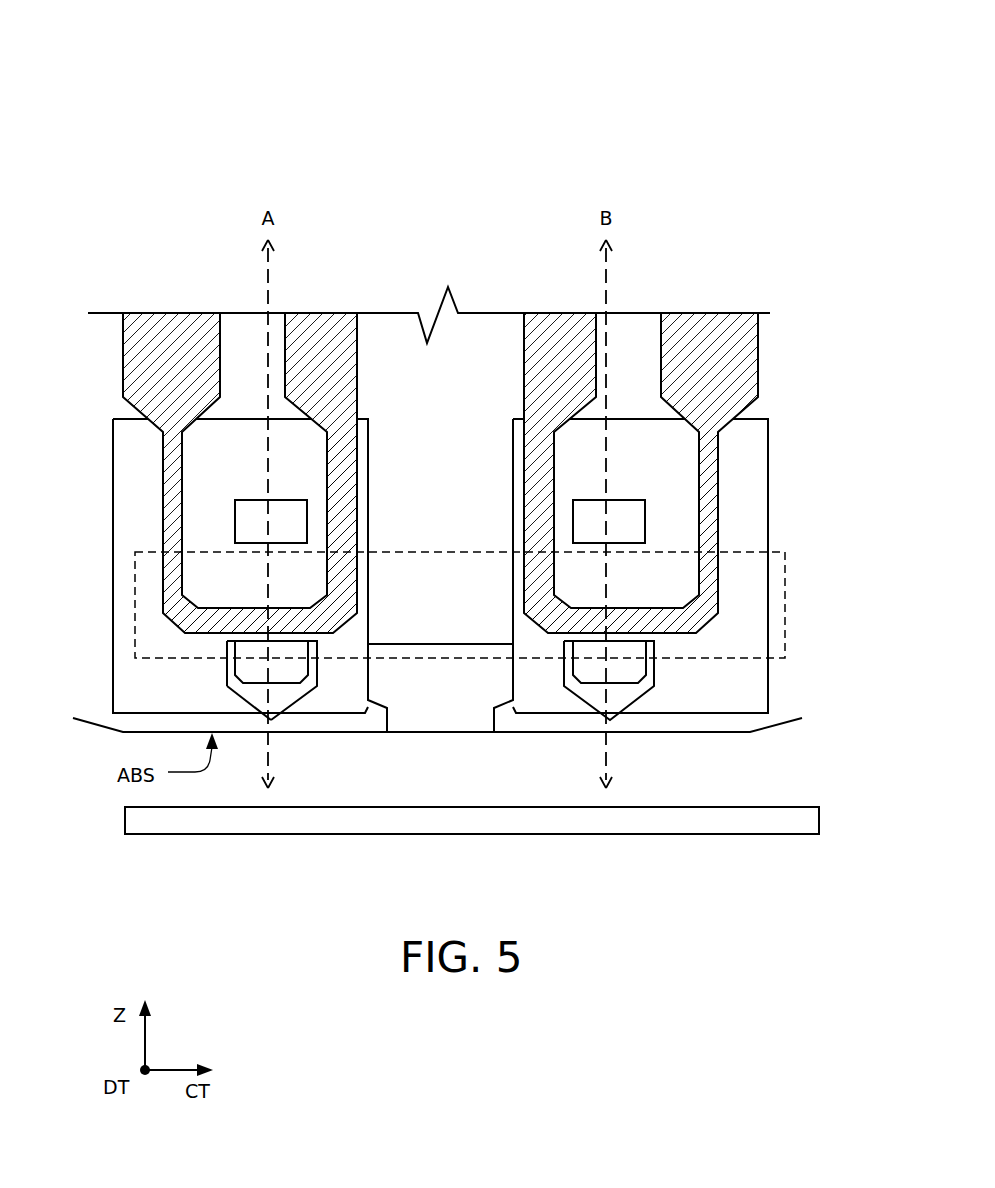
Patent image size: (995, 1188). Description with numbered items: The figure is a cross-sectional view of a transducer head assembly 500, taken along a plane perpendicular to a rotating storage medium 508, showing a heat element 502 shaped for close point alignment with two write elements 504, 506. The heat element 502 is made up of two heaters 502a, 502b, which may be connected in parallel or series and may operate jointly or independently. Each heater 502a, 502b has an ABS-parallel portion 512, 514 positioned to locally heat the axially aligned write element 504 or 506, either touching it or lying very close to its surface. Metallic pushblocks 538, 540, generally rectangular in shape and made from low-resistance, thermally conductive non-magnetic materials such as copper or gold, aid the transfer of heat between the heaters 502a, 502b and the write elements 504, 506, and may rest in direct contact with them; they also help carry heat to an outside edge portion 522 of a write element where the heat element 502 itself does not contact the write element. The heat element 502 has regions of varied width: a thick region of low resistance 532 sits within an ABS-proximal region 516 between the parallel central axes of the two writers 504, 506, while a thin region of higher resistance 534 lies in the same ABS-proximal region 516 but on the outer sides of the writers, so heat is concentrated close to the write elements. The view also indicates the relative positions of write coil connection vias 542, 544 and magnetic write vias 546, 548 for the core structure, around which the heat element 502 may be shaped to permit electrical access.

The transducer head assembly 500 is at (124, 84).
The heat element 502 is at (440, 410).
The heater 502a is at (358, 403).
The heater 502b is at (523, 410).
The write element 504 is at (237, 683).
The write element 506 is at (644, 683).
The rotating storage medium 508 is at (125, 820).
The ABS-parallel portion 512 is at (262, 620).
The ABS-parallel portion 514 is at (618, 620).
The ABS-proximal region 516 is at (790, 552).
The outside edge portion 522 is at (215, 685).
The thick region of low resistance 532 is at (340, 577).
The thin region of higher resistance 534 is at (708, 578).
The metallic pushblock 538 is at (221, 466).
The metallic pushblock 540 is at (618, 463).
The write coil connection via 542 is at (253, 532).
The write coil connection via 544 is at (591, 532).
The magnetic write via 546 is at (254, 671).
The magnetic write via 548 is at (591, 671).